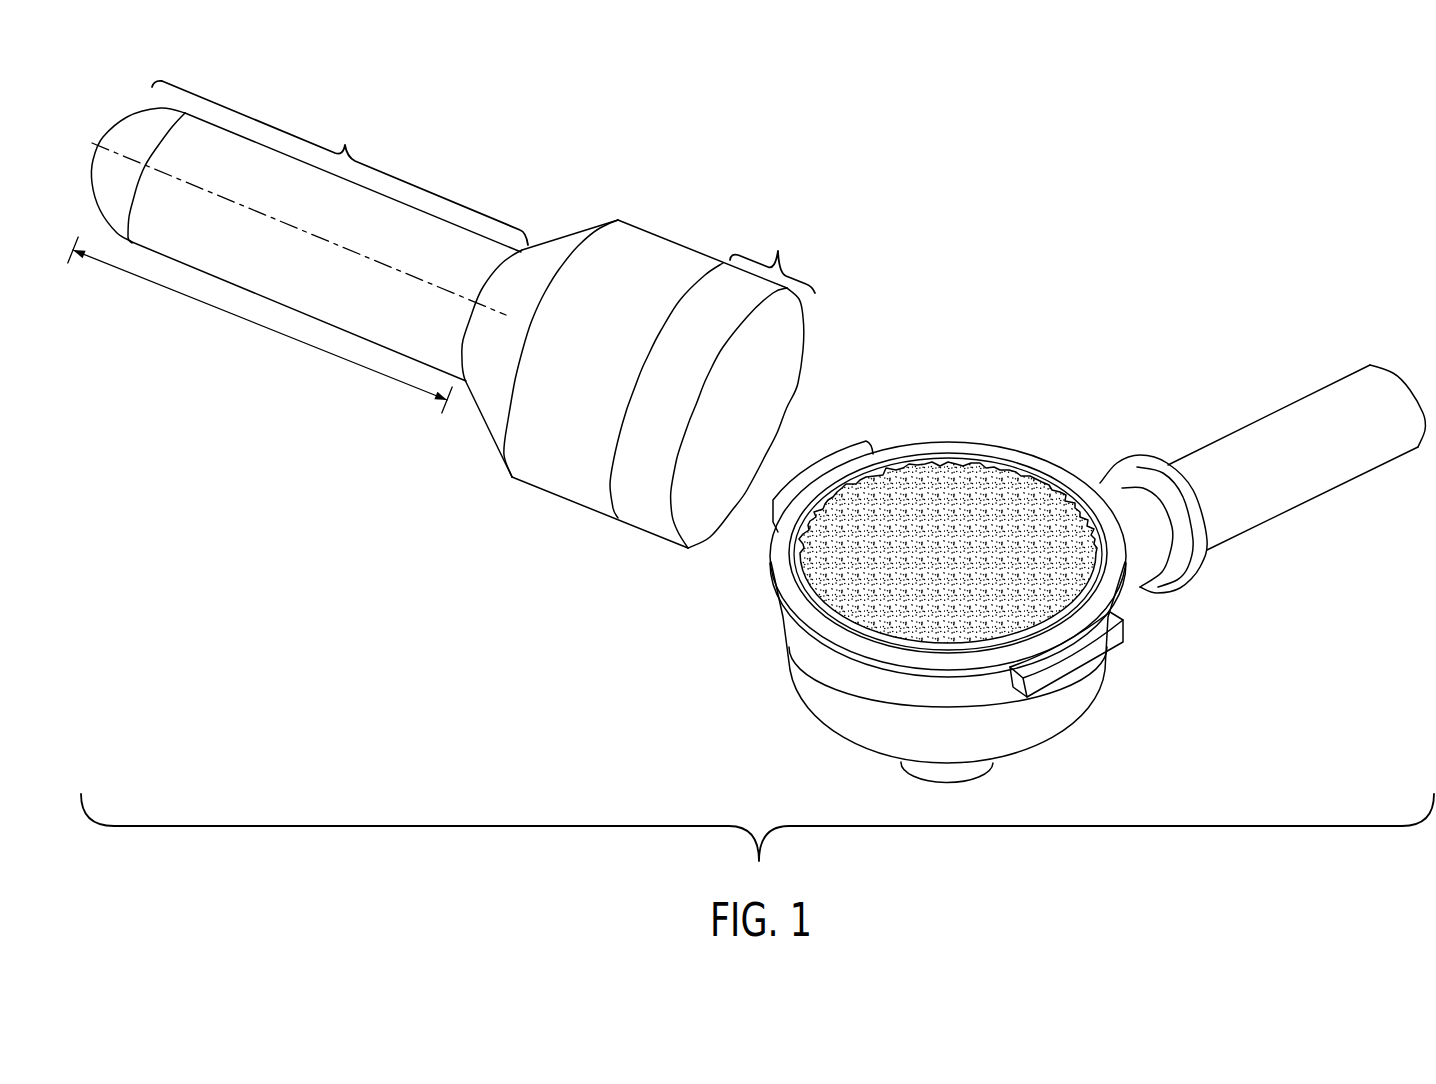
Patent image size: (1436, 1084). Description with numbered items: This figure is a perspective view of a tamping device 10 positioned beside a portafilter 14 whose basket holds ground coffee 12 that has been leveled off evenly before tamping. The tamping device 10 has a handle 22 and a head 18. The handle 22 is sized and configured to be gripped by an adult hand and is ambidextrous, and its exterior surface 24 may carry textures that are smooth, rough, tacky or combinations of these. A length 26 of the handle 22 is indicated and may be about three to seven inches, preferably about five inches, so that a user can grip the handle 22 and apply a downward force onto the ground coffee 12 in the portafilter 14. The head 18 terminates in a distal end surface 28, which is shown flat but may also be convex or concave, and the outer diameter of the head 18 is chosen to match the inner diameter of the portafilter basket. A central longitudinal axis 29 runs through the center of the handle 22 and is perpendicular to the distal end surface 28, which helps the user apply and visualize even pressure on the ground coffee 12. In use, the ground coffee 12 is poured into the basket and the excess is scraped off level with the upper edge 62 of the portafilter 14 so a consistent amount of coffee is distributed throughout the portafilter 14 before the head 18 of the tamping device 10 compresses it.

The tamping device 10 is at (716, 158).
The ground coffee 12 is at (943, 555).
The portafilter 14 is at (1163, 633).
The head 18 is at (638, 431).
The handle 22 is at (298, 242).
The exterior surface 24 is at (287, 252).
The length 26 is at (143, 277).
The distal end surface 28 is at (708, 480).
The central longitudinal axis 29 is at (137, 158).
The upper edge 62 is at (1027, 454).